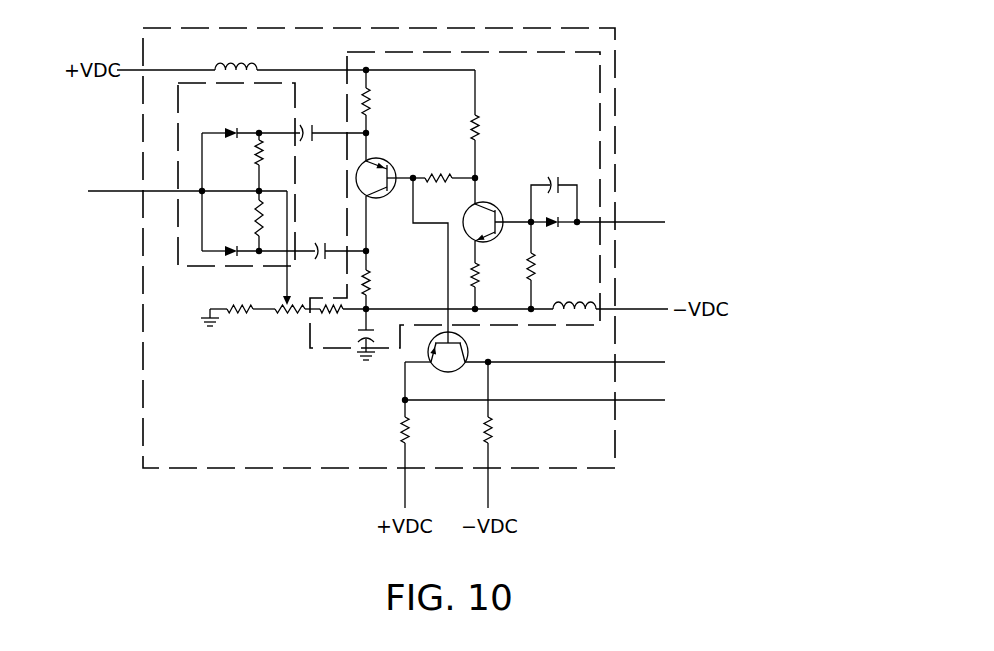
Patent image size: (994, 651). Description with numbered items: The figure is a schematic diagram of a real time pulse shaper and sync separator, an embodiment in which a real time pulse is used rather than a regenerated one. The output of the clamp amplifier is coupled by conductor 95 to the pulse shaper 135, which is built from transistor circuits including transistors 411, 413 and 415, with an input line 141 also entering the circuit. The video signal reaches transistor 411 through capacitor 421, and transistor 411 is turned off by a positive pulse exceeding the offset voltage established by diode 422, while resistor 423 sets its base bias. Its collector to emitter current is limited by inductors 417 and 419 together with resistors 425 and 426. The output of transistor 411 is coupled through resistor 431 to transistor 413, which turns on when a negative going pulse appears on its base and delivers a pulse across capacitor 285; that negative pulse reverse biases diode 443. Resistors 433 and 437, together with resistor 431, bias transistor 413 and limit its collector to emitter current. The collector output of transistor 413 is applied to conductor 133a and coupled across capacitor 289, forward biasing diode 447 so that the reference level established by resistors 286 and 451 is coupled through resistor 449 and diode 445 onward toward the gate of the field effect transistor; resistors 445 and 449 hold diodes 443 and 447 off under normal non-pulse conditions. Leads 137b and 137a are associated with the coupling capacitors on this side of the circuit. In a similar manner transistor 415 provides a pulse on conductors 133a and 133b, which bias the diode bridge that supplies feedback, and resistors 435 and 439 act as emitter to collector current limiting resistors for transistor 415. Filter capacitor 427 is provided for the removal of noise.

The inductor 417 is at (233, 66).
The input line 141 is at (107, 191).
The diode 443 is at (234, 130).
The resistor 445 is at (255, 164).
The resistor 449 is at (254, 214).
The diode 447 is at (229, 246).
The capacitor 285 is at (301, 125).
The conductor 137b is at (326, 142).
The capacitor 289 is at (315, 253).
The conductor 137a is at (332, 242).
The resistor 433 is at (372, 100).
The transistor 413 is at (386, 162).
The resistor 431 is at (436, 174).
The resistor 425 is at (480, 124).
The transistor 411 is at (488, 202).
The resistor 426 is at (477, 283).
The capacitor 421 is at (550, 172).
The diode 422 is at (552, 229).
The conductor 95 is at (632, 222).
The resistor 423 is at (529, 265).
The inductor 419 is at (564, 307).
The resistor 437 is at (374, 276).
The resistor 451 is at (236, 316).
The resistor 286 is at (288, 316).
The filter capacitor 427 is at (364, 337).
The pulse shaper 135 is at (342, 350).
The transistor 415 is at (468, 345).
The conductor 133b is at (640, 362).
The conductor 133a is at (640, 402).
The resistor 435 is at (408, 431).
The resistor 439 is at (490, 431).